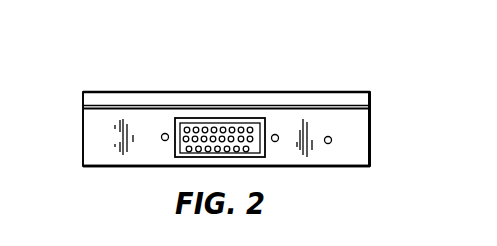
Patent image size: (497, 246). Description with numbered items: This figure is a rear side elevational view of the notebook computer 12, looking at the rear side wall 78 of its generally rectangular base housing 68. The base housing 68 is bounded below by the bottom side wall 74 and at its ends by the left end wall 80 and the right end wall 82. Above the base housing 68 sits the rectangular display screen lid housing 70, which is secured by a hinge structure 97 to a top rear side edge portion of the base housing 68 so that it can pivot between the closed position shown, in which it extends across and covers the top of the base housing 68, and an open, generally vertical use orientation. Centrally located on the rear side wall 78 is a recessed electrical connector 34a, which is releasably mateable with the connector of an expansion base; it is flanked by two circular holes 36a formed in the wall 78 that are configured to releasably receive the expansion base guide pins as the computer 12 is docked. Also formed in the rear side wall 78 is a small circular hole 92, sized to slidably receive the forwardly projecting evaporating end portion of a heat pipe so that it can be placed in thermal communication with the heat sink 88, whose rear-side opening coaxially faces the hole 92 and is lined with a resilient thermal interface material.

The notebook computer 12 is at (331, 72).
The display screen lid housing 70 is at (378, 99).
The hinge structure 97 is at (372, 107).
The left end wall 80 is at (372, 148).
The base housing 68 is at (378, 164).
The right end wall 82 is at (83, 137).
The rear side wall 78 is at (105, 146).
The bottom side wall 74 is at (140, 168).
The recessed electrical connector 34a is at (227, 117).
The circular holes 36a is at (164, 133).
The small circular hole 92 is at (329, 144).
The heat sink 88 is at (489, 208).